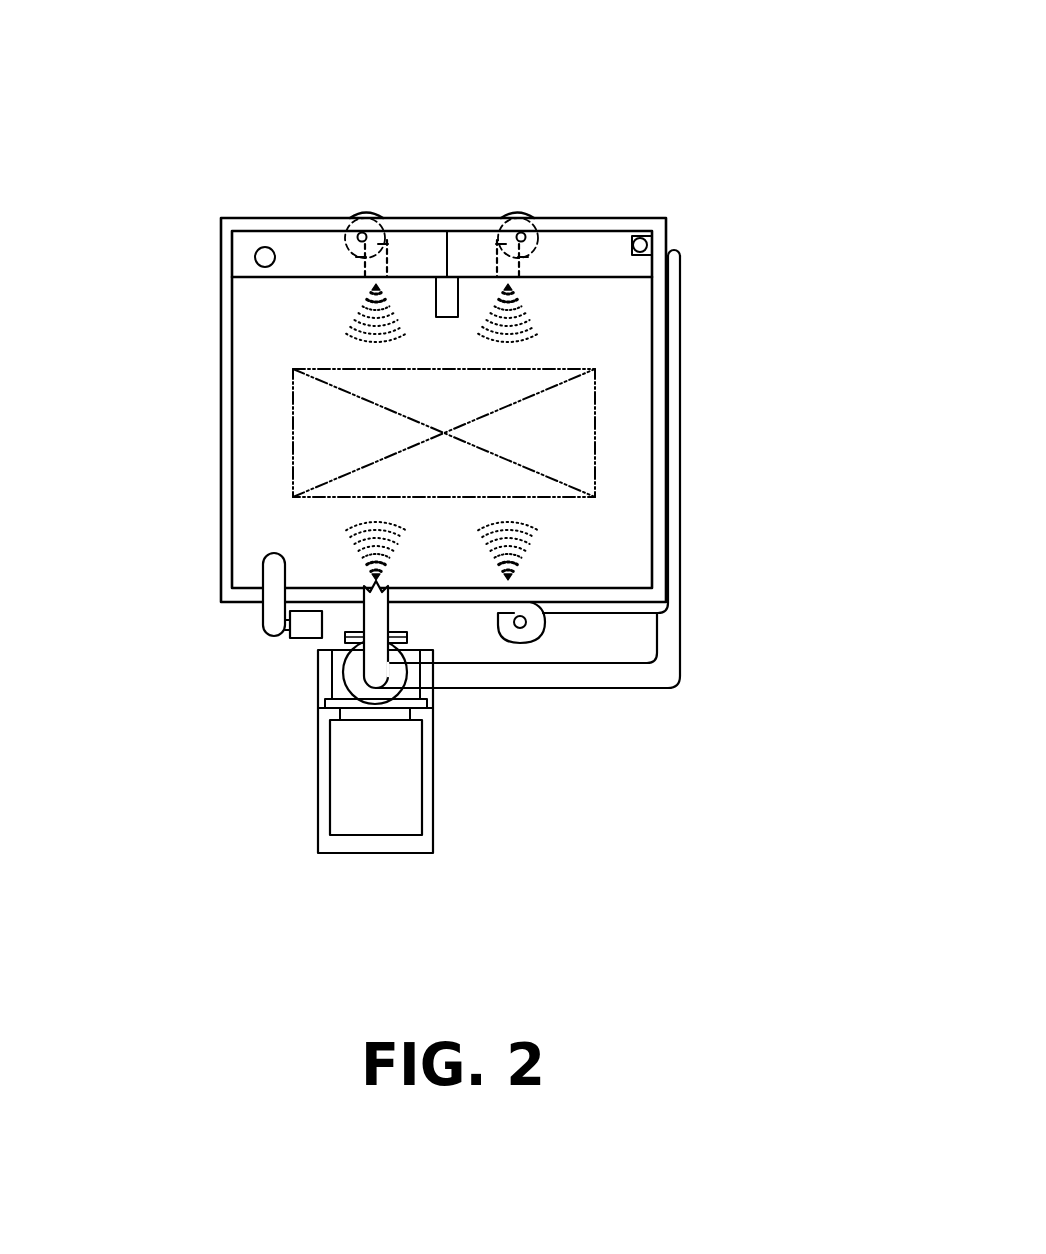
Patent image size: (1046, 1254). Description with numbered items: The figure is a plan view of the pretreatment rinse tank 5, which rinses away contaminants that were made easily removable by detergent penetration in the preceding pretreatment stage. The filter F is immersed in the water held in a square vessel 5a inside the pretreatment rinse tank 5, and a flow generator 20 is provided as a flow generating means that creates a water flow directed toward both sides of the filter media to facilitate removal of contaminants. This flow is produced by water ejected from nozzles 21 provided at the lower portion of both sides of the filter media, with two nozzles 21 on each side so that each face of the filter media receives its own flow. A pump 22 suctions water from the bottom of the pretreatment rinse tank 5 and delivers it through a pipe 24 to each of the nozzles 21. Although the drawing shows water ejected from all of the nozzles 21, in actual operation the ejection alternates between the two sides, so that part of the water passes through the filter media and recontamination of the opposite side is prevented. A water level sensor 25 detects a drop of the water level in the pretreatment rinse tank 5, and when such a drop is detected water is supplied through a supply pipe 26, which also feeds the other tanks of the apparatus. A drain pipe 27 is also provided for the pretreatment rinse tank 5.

The pretreatment rinse tank 5 is at (400, 301).
The square vessel 5a is at (226, 334).
The flow generator 20 is at (521, 559).
The nozzles 21 is at (482, 236).
The pump 22 is at (393, 778).
The pipe 24 is at (668, 637).
The water level sensor 25 is at (640, 238).
The supply pipe 26 is at (272, 612).
The drain pipe 27 is at (447, 318).
The filter F is at (600, 400).